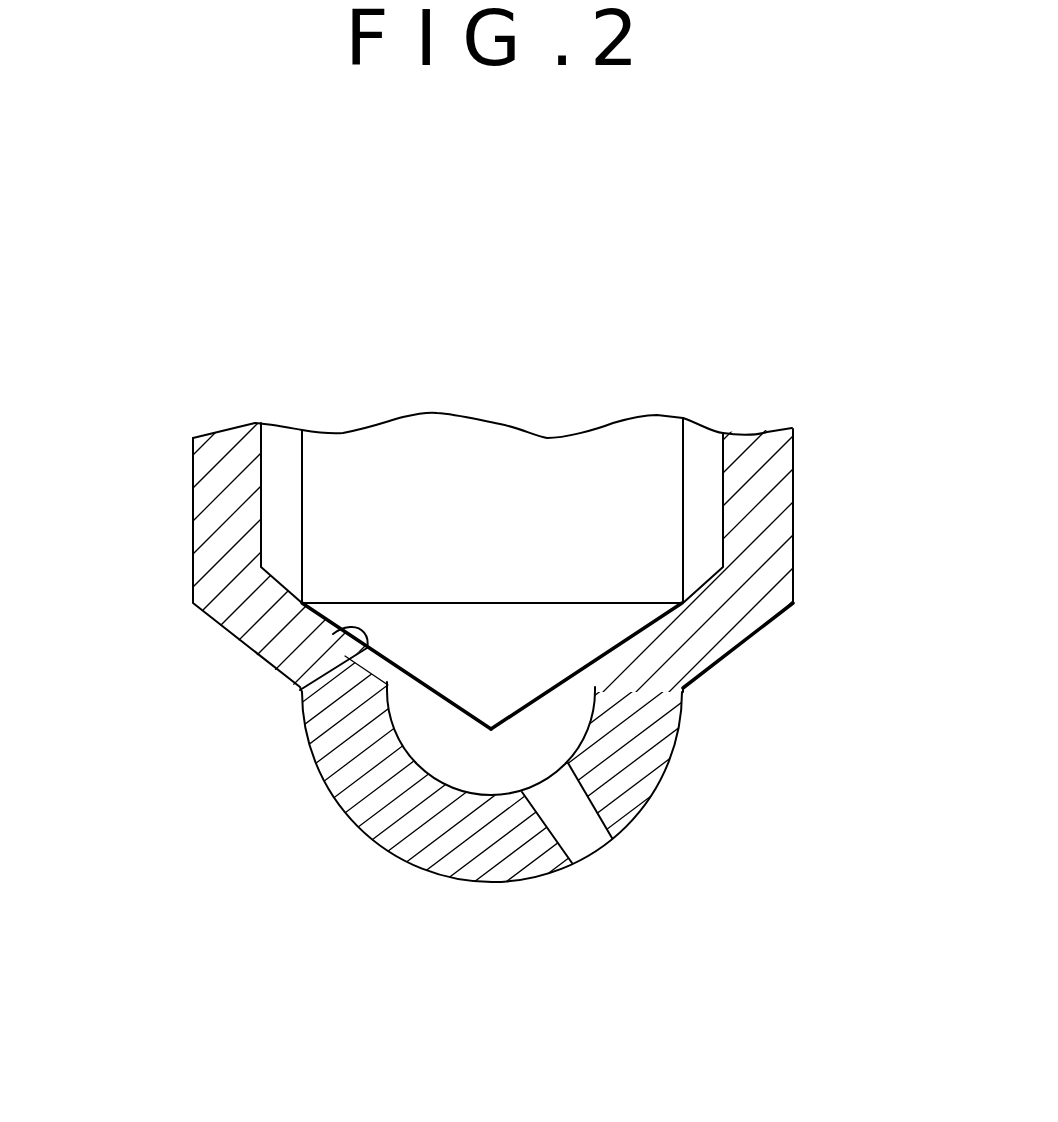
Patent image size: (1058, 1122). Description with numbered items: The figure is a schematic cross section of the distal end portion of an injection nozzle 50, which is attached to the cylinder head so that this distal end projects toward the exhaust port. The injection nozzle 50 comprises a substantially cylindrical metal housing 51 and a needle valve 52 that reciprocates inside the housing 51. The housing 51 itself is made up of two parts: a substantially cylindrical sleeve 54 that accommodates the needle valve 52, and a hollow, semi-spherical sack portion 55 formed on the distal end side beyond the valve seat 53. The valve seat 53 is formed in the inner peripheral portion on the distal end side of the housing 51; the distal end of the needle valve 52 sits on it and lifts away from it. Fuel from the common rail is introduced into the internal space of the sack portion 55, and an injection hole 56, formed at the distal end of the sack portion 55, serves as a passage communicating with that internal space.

The injection nozzle 50 is at (155, 475).
The housing 51 is at (578, 729).
The needle valve 52 is at (685, 444).
The valve seat 53 is at (298, 693).
The sleeve 54 is at (793, 572).
The sack portion 55 is at (676, 746).
The injection hole 56 is at (595, 820).